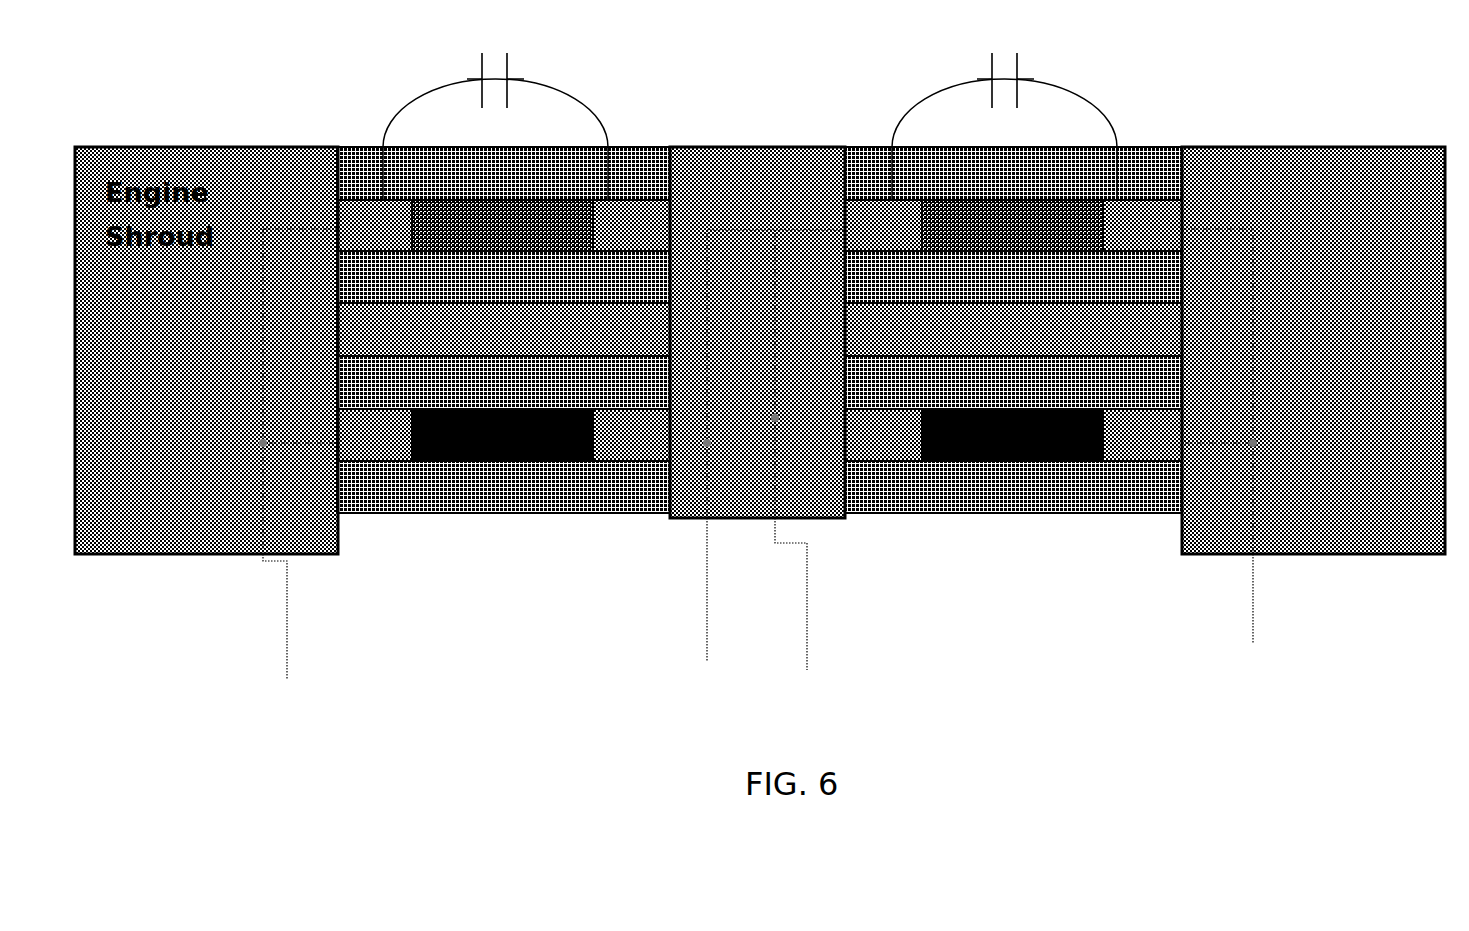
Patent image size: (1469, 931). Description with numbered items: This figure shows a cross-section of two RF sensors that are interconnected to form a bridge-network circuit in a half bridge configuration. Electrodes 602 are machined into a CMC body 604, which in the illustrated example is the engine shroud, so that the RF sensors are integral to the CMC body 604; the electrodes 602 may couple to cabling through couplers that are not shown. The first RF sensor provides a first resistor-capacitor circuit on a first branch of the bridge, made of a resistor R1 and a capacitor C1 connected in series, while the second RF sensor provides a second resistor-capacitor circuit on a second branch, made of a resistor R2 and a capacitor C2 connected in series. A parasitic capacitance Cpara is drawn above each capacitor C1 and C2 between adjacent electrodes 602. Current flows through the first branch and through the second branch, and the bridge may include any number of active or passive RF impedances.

The electrodes 602 is at (283, 602).
The CMC body 604 is at (1302, 597).
The capacitor C1 is at (495, 114).
The capacitor C2 is at (1004, 114).
The parasitic capacitance Cpara is at (531, 68).
The resistor R1 is at (502, 435).
The resistor R2 is at (1012, 435).